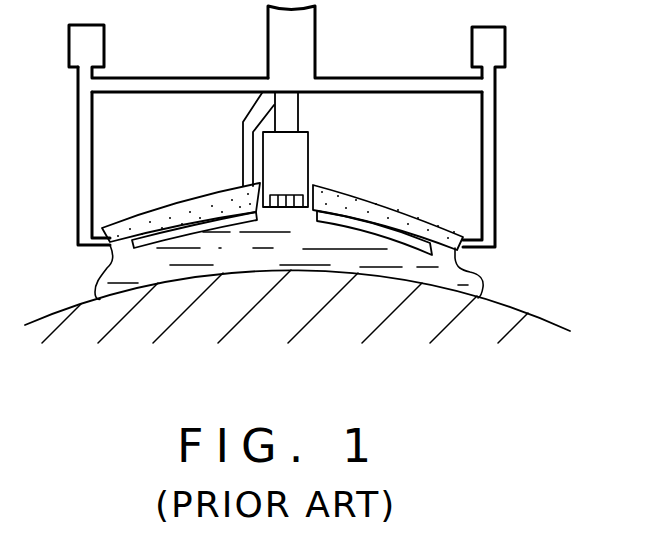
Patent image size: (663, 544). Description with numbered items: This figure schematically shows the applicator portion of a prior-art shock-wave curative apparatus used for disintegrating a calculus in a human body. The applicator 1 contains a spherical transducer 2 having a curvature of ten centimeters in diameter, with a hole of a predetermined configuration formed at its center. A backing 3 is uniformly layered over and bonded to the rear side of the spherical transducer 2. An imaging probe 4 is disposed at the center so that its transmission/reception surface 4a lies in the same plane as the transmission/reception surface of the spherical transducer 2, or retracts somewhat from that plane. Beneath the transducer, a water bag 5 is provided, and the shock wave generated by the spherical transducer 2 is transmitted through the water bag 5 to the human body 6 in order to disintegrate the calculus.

The applicator 1 is at (158, 113).
The spherical transducer 2 is at (428, 243).
The backing 3 is at (397, 207).
The imaging probe 4 is at (272, 124).
The transmission/reception surface 4a is at (290, 195).
The water bag 5 is at (98, 284).
The human body 6 is at (538, 327).